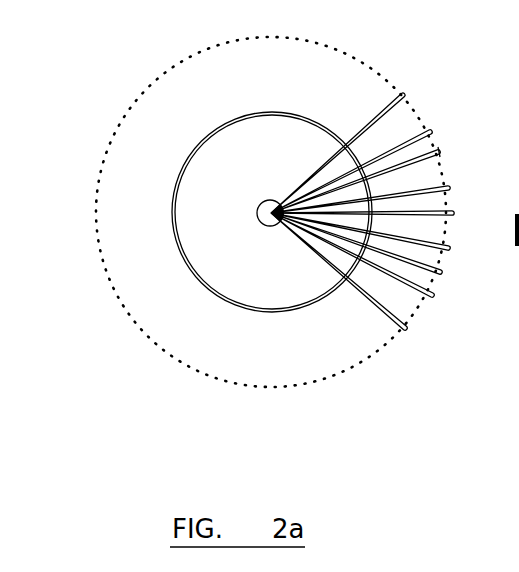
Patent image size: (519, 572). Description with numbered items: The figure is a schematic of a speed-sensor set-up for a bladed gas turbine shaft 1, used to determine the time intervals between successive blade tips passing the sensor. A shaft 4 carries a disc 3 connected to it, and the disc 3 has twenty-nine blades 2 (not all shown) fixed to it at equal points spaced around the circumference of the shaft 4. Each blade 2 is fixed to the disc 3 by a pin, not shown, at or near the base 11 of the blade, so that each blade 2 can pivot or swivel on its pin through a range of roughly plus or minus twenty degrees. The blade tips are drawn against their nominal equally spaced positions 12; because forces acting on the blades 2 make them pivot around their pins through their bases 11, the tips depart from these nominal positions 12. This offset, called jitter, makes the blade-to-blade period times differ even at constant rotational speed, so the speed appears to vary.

The bladed gas turbine shaft 1 is at (157, 247).
The blades 2 is at (407, 95).
The disc 3 is at (208, 273).
The shaft 4 is at (265, 220).
The base 11 is at (347, 150).
The nominal equally spaced positions 12 is at (443, 270).